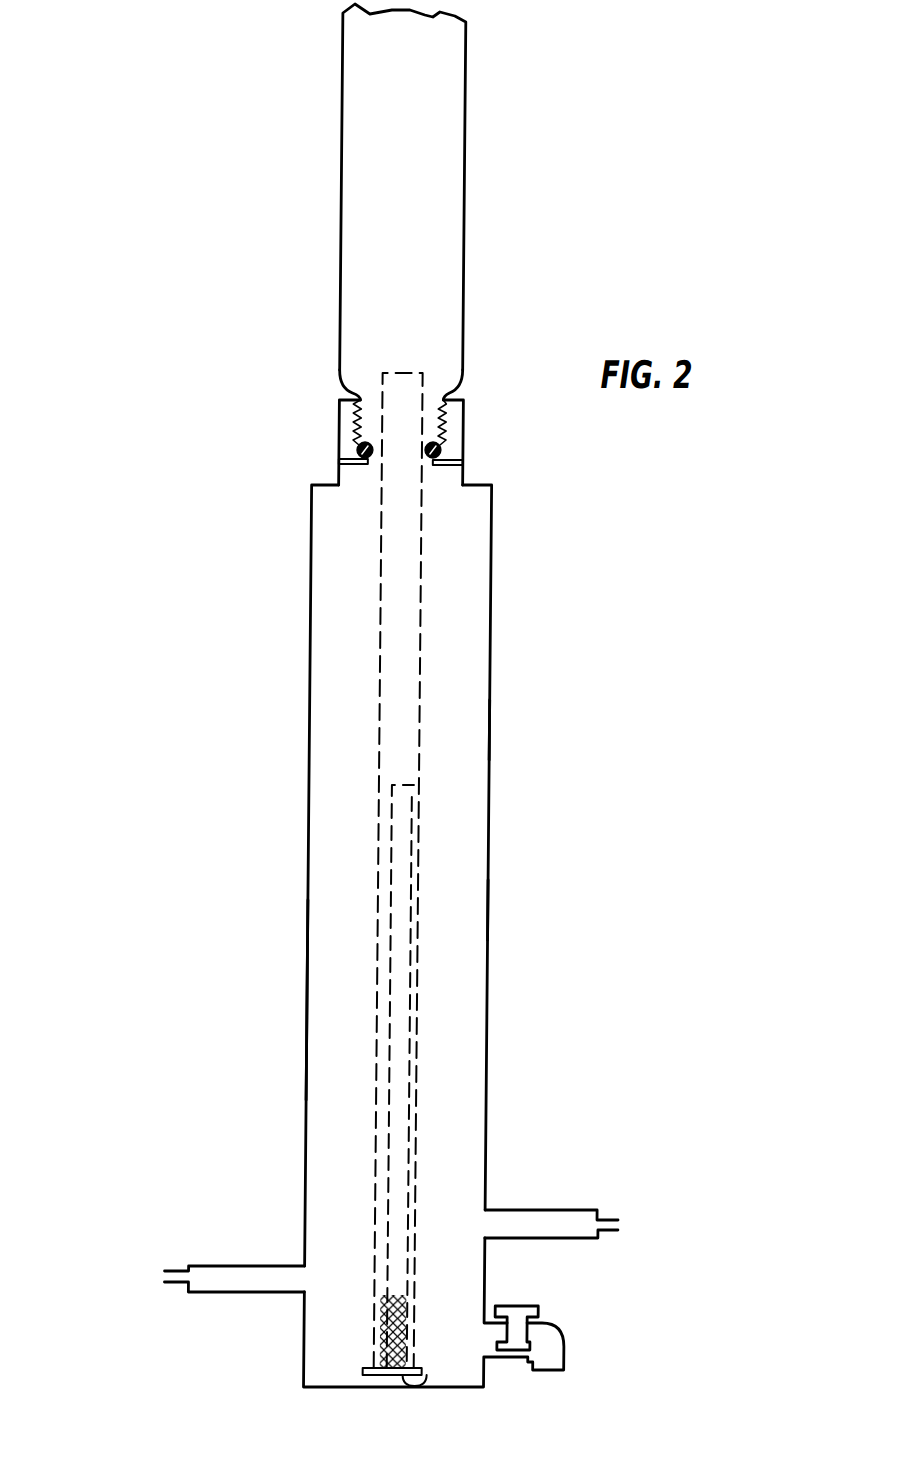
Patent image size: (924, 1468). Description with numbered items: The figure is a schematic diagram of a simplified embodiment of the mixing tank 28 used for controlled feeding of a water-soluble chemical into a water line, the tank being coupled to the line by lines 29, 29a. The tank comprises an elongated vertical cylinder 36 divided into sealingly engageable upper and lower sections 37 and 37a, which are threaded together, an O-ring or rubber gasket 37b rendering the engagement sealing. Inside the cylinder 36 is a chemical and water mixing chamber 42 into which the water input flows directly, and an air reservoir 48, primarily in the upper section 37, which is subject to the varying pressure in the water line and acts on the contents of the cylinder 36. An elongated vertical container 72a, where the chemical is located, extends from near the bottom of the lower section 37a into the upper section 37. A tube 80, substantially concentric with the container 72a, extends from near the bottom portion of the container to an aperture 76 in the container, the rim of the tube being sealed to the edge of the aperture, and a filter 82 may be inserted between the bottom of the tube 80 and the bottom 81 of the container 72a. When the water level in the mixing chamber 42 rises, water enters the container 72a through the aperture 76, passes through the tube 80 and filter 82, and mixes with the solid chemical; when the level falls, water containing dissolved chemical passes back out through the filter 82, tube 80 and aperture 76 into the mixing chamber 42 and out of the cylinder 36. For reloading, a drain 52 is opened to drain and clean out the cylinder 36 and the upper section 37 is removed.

The mixing tank 28 is at (574, 700).
The line 29 is at (194, 1292).
The line 29a is at (623, 1218).
The elongated vertical cylinder 36 is at (308, 704).
The upper section 37 is at (338, 245).
The lower section 37a is at (309, 1005).
The O-ring or rubber gasket 37b is at (444, 453).
The chemical and water mixing chamber 42 is at (463, 908).
The air reservoir 48 is at (446, 172).
The drain 52 is at (572, 1345).
The elongated vertical container 72a is at (426, 657).
The aperture 76 is at (425, 793).
The tube 80 is at (419, 982).
The bottom 81 is at (443, 1372).
The filter 82 is at (387, 1365).